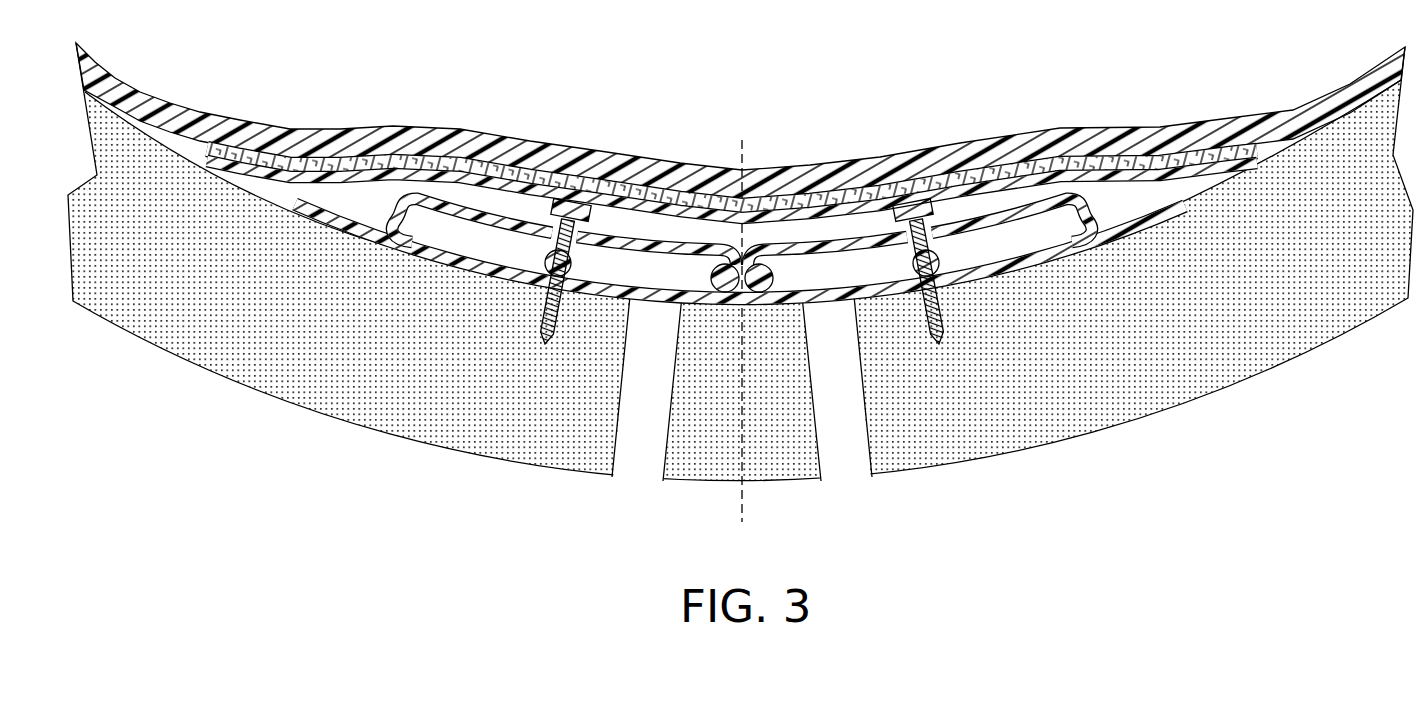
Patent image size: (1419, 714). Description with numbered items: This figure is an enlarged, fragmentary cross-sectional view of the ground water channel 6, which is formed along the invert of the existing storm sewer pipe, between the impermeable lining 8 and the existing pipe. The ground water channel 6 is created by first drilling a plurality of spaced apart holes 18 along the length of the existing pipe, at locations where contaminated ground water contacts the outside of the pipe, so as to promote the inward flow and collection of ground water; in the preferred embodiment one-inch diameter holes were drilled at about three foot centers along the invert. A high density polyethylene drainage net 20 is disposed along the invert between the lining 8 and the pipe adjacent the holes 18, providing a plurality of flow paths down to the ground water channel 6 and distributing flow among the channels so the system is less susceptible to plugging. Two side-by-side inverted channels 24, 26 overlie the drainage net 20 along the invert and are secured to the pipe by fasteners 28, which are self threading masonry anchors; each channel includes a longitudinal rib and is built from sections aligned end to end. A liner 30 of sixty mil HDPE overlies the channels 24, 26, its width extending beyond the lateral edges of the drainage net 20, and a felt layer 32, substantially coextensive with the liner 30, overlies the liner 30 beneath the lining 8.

The ground water channel 6 is at (484, 248).
The impermeable lining 8 is at (995, 142).
The holes 18 is at (645, 457).
The drainage net 20 is at (373, 232).
The inverted channel 24 is at (621, 239).
The inverted channel 26 is at (1070, 199).
The fasteners 28 is at (539, 313).
The liner 30 is at (325, 176).
The felt layer 32 is at (1120, 164).